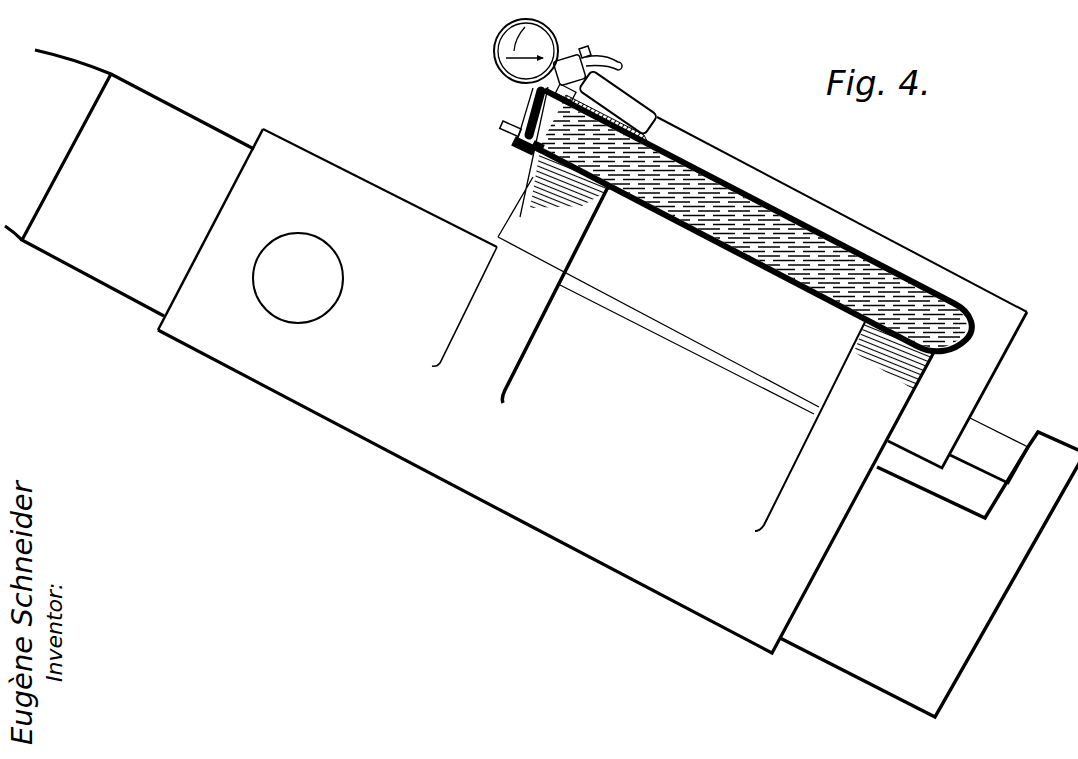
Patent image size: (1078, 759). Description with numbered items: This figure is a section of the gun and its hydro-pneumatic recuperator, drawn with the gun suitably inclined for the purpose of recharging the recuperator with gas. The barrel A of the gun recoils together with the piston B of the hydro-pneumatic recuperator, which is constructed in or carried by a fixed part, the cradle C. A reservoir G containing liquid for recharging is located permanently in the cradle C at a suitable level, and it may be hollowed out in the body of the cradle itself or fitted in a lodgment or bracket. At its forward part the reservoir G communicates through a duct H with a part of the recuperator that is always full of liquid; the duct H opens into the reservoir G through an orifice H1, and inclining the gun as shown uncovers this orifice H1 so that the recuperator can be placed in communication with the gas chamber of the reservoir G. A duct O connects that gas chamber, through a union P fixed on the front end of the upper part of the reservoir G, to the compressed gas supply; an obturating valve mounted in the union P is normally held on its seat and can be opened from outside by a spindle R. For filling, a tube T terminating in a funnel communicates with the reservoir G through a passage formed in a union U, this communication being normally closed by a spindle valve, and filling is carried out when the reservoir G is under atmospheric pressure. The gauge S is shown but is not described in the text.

The barrel A is at (175, 115).
The piston B is at (993, 440).
The cradle C is at (403, 209).
The reservoir G is at (720, 219).
The gauge dial S is at (513, 51).
The union P is at (564, 60).
The spindle R is at (590, 52).
The duct O is at (620, 65).
The tube T is at (532, 103).
The union U is at (505, 125).
The duct H is at (523, 149).
The orifice H1 is at (539, 147).